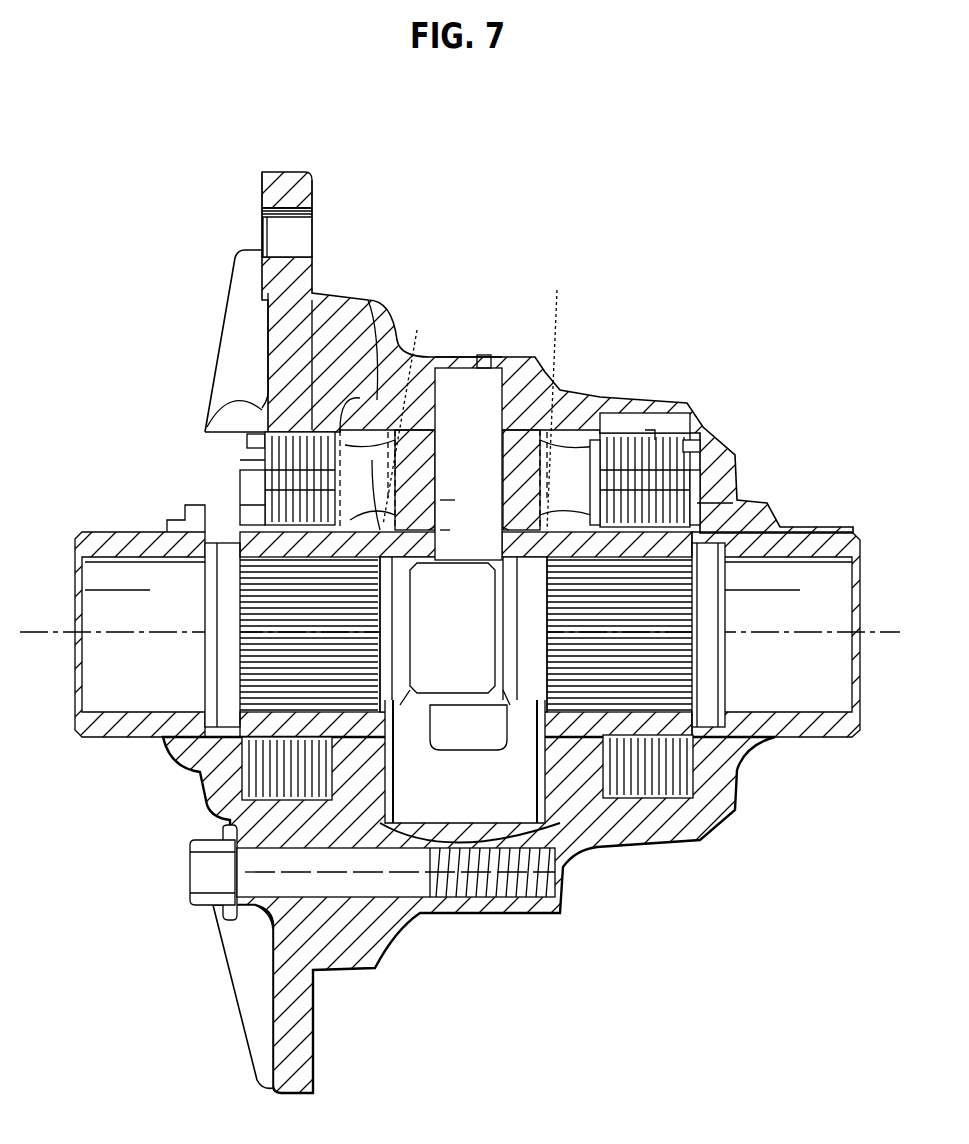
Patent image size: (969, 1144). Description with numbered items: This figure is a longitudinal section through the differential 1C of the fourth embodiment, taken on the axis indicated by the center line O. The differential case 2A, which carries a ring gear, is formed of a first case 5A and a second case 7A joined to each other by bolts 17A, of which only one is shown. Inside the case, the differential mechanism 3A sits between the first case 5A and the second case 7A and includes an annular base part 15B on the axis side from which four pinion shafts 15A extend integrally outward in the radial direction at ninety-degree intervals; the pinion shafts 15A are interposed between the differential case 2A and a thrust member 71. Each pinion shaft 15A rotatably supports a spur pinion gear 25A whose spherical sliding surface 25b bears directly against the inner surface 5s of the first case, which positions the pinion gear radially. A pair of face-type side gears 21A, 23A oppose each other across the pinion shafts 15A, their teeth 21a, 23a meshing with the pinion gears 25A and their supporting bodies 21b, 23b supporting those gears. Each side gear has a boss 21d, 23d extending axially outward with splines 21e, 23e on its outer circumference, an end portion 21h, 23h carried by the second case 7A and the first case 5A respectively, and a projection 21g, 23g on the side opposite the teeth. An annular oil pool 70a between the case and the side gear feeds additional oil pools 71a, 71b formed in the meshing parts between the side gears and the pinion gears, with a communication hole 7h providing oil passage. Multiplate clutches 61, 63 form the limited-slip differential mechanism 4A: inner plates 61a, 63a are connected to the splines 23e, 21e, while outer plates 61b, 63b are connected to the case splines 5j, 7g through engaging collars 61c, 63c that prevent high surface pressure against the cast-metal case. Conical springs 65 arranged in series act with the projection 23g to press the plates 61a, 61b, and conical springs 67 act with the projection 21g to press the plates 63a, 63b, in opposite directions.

The differential 1C is at (686, 143).
The differential case 2A is at (297, 169).
The differential mechanism 3A is at (602, 263).
The limited-slip differential mechanism 4A is at (732, 366).
The first case 5A is at (690, 273).
The spline 5j is at (650, 430).
The inner surface of the first case 5s is at (497, 342).
The second case 7A is at (183, 258).
The spline 7g is at (320, 437).
The communication hole 7h is at (262, 218).
The pinion shaft 15A is at (495, 530).
The base part 15B is at (487, 745).
The bolt 17A is at (190, 877).
The side gear 21A is at (377, 453).
The teeth 21a is at (410, 414).
The supporting body 21b is at (417, 557).
The boss 21d is at (277, 545).
The spline 21e is at (167, 522).
The projection 21g is at (377, 393).
The end portion 21h is at (207, 573).
The side gear 23A is at (580, 389).
The teeth 23a is at (553, 393).
The supporting body 23b is at (527, 540).
The boss 23d is at (627, 545).
The spline 23e is at (697, 503).
The projection 23g is at (515, 500).
The end portion 23h is at (767, 530).
The pinion gear 25A is at (447, 500).
The sliding surface 25b is at (450, 530).
The multiplate clutch 61 is at (692, 398).
The inner plate 61a is at (693, 563).
The outer plate 61b is at (693, 403).
The engaging collar 61c is at (600, 433).
The multiplate clutch 63 is at (199, 370).
The inner plate 63a is at (247, 480).
The outer plate 63b is at (237, 403).
The engaging collar 63c is at (240, 437).
The conical spring 65 is at (690, 467).
The conical spring 67 is at (265, 468).
The annular oil pool 70a is at (372, 460).
The thrust member 71 is at (423, 703).
The oil pool 71a is at (253, 493).
The oil pool 71b is at (590, 453).
The rotation axis O is at (34, 636).